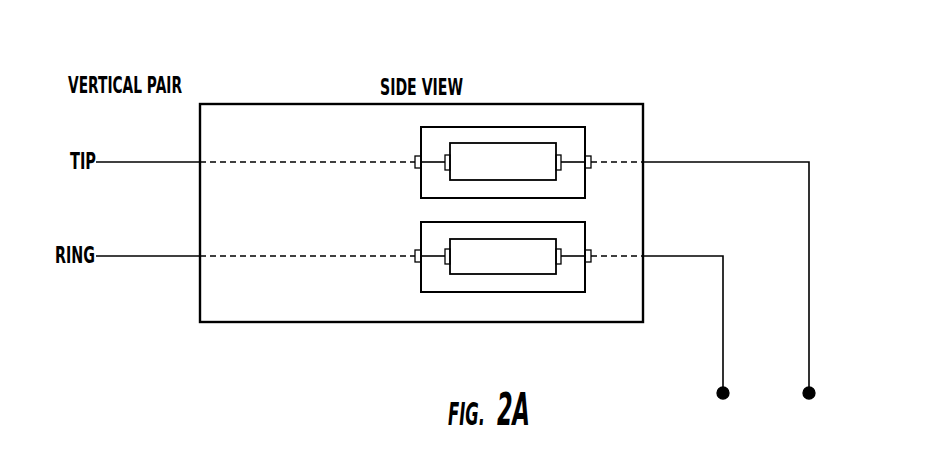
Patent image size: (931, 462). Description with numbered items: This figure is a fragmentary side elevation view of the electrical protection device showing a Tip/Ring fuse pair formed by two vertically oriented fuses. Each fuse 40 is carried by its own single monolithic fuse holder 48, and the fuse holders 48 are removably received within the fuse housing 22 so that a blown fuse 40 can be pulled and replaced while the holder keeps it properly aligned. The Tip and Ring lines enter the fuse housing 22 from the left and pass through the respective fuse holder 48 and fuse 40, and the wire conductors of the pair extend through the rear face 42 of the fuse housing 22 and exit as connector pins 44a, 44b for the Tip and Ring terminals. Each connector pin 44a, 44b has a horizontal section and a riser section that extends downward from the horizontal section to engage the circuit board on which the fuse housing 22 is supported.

The fuse housing 22 is at (278, 104).
The rear face 42 is at (643, 122).
The fuse holder 48 is at (421, 143).
The fuse 40 is at (547, 152).
The connector pin 44a is at (750, 162).
The connector pin 44b is at (691, 256).